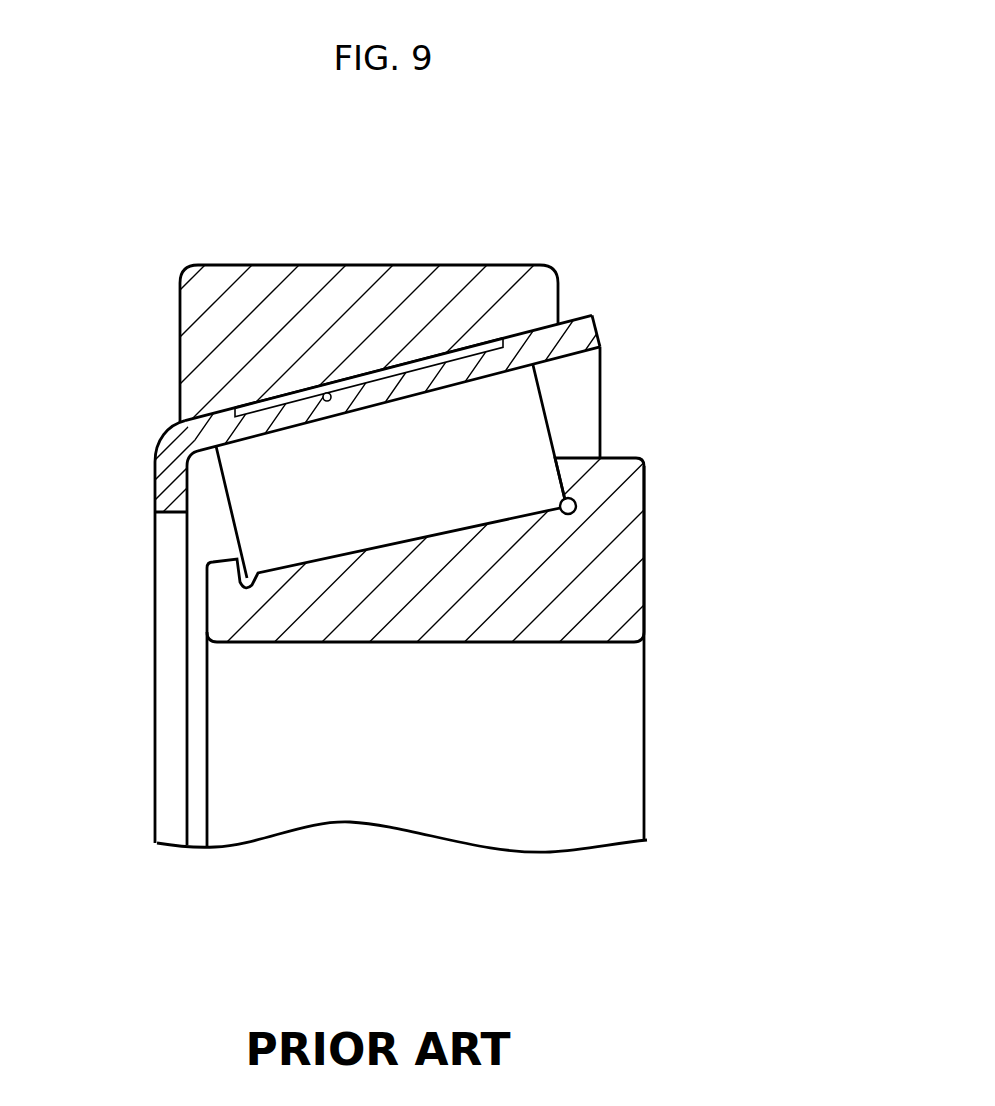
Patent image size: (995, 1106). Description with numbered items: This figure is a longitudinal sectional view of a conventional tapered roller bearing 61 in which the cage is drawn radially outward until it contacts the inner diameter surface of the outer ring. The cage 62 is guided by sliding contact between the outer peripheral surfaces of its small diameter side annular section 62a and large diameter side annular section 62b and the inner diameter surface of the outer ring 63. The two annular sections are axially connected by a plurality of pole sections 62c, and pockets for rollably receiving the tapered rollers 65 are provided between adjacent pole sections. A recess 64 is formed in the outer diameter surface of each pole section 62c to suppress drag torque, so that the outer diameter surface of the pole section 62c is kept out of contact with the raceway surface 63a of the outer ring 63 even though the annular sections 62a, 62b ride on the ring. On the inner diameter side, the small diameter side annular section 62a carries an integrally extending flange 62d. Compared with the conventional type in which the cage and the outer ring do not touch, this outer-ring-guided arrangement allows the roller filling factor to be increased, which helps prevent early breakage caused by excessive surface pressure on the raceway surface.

The tapered roller bearing 61 is at (645, 260).
The cage 62 is at (600, 328).
The small diameter side annular section 62a is at (193, 420).
The large diameter side annular section 62b is at (575, 333).
The pole section 62c is at (303, 417).
The flange 62d is at (162, 500).
The outer ring 63 is at (357, 278).
The raceway surface 63a is at (323, 395).
The recess 64 is at (438, 352).
The tapered roller 65 is at (497, 500).